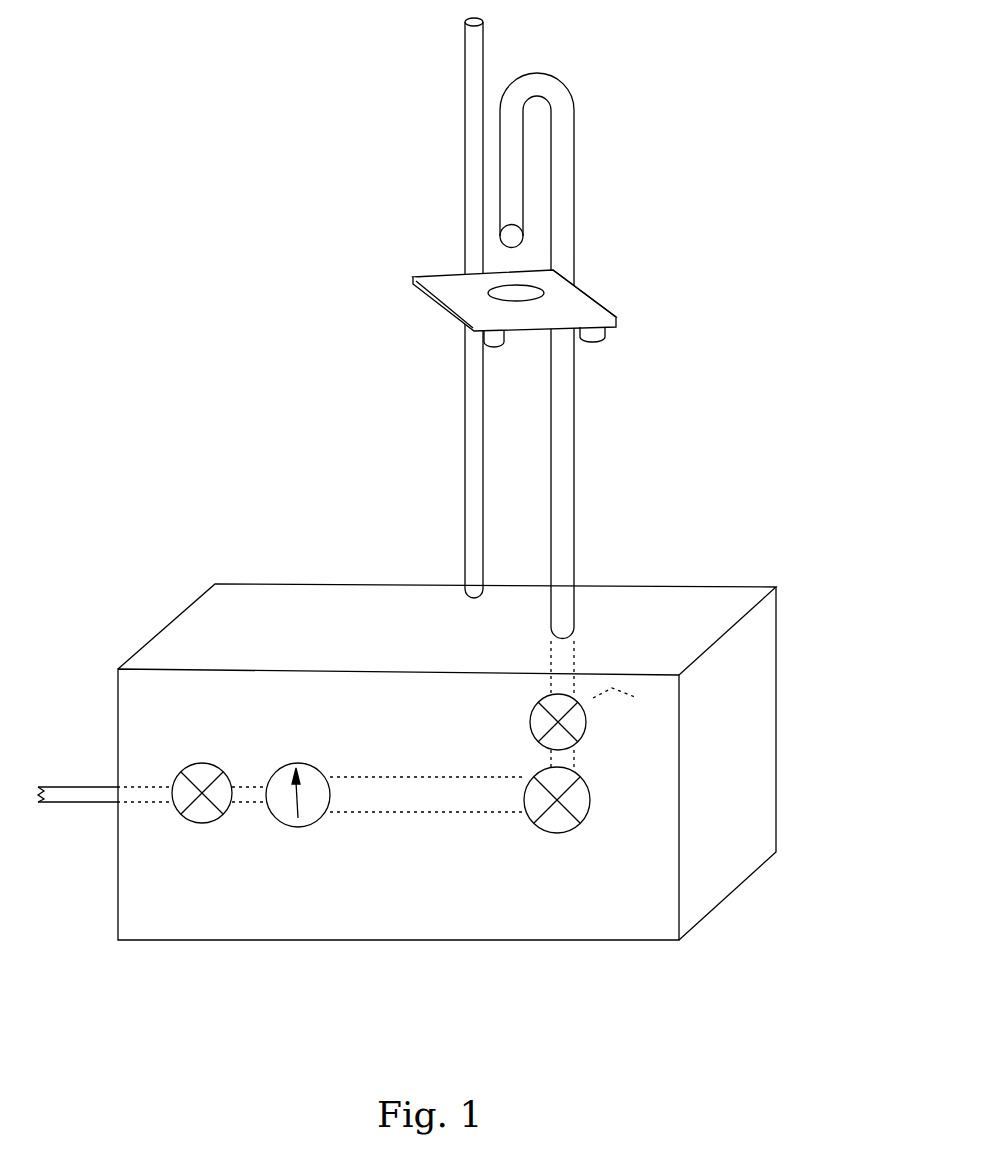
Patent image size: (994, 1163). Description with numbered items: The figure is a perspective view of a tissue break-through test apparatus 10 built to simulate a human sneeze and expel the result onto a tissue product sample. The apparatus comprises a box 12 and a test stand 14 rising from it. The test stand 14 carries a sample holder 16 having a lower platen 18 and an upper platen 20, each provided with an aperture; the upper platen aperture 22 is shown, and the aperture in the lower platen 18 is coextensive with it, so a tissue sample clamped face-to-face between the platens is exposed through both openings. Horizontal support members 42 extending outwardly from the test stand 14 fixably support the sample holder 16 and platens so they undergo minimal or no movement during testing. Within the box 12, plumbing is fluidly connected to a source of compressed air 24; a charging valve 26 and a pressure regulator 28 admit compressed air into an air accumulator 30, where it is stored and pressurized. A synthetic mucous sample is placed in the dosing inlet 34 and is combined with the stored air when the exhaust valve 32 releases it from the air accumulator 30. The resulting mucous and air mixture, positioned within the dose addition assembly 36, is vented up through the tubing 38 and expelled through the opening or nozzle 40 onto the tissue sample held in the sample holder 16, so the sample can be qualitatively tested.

The break-through test apparatus 10 is at (681, 107).
The box 12 is at (747, 549).
The test stand 14 is at (384, 152).
The sample holder 16 is at (634, 312).
The lower platen 18 is at (412, 286).
The upper platen 20 is at (587, 289).
The upper platen aperture 22 is at (528, 283).
The source of compressed air 24 is at (82, 772).
The charging valve 26 is at (203, 821).
The pressure regulator 28 is at (284, 768).
The air accumulator 30 is at (433, 813).
The exhaust valve 32 is at (568, 819).
The dosing inlet 34 is at (592, 725).
The dose addition assembly 36 is at (532, 720).
The tubing 38 is at (565, 473).
The opening (or nozzle) 40 is at (510, 246).
The horizontal support members 42 is at (496, 348).